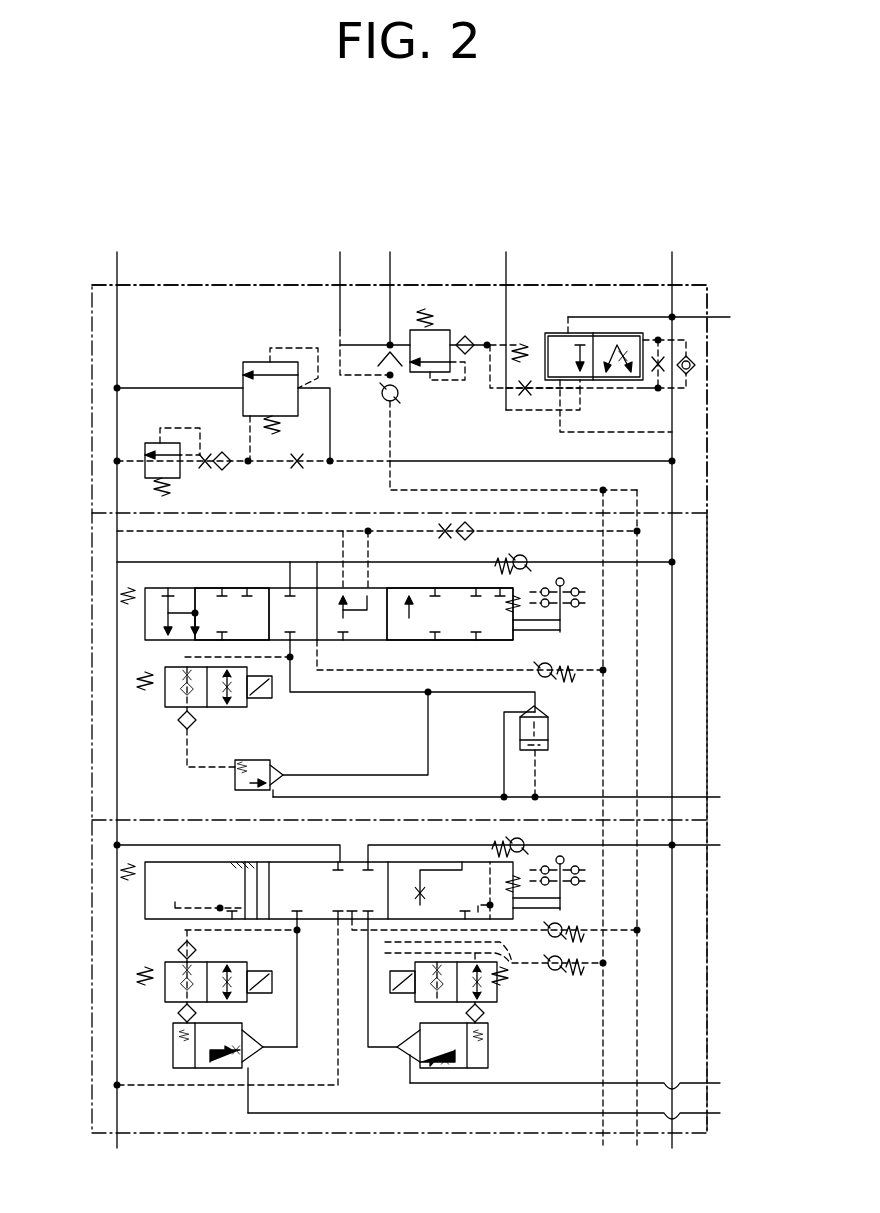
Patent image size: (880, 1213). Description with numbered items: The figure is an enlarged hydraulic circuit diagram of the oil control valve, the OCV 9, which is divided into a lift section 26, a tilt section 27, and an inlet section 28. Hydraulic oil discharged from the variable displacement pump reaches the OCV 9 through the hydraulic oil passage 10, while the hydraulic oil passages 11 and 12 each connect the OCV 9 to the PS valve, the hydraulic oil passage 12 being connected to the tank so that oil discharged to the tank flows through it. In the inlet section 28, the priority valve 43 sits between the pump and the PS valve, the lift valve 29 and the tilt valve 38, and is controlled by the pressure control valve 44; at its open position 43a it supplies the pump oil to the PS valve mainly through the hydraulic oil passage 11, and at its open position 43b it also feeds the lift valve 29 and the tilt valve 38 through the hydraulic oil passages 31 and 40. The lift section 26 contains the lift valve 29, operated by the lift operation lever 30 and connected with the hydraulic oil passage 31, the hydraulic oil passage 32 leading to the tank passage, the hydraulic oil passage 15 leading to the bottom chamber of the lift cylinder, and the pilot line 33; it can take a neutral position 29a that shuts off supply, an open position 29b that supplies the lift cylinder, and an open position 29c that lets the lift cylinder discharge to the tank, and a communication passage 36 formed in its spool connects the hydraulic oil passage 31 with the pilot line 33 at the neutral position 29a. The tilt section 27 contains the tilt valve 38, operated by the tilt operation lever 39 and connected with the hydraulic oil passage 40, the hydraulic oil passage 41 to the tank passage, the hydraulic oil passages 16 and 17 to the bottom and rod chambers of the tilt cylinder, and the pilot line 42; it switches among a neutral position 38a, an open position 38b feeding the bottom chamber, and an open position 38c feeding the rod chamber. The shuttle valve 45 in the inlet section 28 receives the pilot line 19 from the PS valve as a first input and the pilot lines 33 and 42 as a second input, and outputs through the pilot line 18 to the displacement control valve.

The OCV 9 is at (205, 207).
The hydraulic oil passage 10 is at (630, 320).
The hydraulic oil passage 11 is at (508, 295).
The hydraulic oil passage 12 is at (117, 330).
The hydraulic oil passage 15 is at (668, 800).
The hydraulic oil passage 16 is at (688, 1083).
The hydraulic oil passage 17 is at (695, 1134).
The pilot line 18 is at (340, 300).
The pilot line 19 is at (395, 295).
The lift section 26 is at (708, 663).
The tilt section 27 is at (708, 927).
The inlet section 28 is at (708, 423).
The lift valve 29 is at (140, 600).
The neutral position 29a is at (270, 588).
The open position 29b is at (203, 588).
The open position 29c is at (422, 588).
The lift operation lever 30 is at (535, 626).
The hydraulic oil passage 31 is at (672, 534).
The hydraulic oil passage 32 is at (135, 556).
The pilot line 33 is at (520, 684).
The communication passage 36 is at (318, 590).
The tilt valve 38 is at (140, 865).
The neutral position 38a is at (257, 1002).
The open position 38b is at (505, 935).
The open position 38c is at (209, 948).
The tilt operation lever 39 is at (562, 900).
The hydraulic oil passage 40 is at (672, 847).
The hydraulic oil passage 41 is at (135, 845).
The pilot line 42 is at (510, 962).
The priority valve 43 is at (560, 340).
The open position 43a is at (580, 365).
The open position 43b is at (575, 385).
The pressure control valve 44 is at (428, 330).
The shuttle valve 45 is at (380, 398).